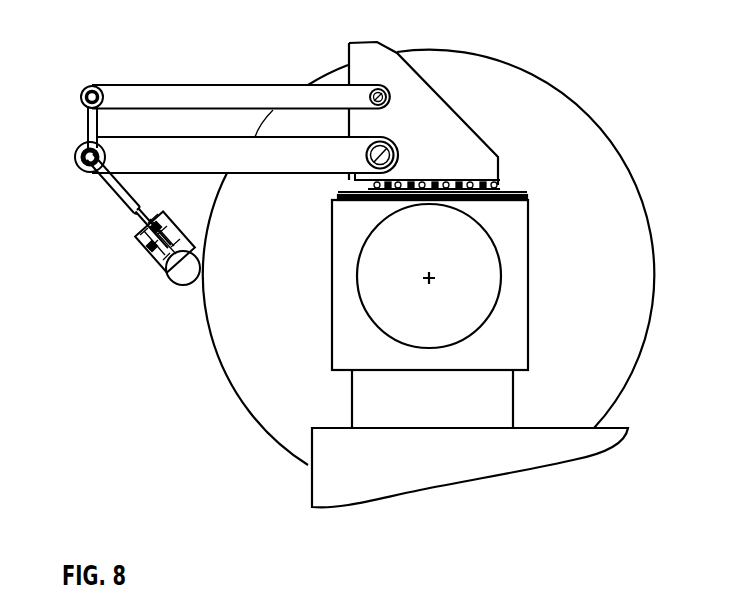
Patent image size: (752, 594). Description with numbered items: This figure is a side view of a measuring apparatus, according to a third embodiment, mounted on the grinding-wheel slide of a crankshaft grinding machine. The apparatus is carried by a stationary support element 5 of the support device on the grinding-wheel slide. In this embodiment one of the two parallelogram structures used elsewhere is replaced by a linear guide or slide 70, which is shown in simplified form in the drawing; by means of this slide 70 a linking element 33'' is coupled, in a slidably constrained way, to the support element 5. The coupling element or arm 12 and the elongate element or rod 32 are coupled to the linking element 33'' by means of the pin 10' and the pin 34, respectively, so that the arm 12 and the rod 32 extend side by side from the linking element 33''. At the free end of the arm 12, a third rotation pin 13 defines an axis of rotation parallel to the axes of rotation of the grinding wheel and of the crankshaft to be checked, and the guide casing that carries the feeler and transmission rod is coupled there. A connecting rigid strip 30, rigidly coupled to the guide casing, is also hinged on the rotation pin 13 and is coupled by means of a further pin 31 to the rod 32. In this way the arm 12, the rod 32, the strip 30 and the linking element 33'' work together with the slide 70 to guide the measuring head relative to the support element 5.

The stationary support element 5 is at (513, 190).
The pin 10' is at (429, 95).
The second rotating coupling element 12 is at (157, 157).
The third rotation pin 13 is at (90, 173).
The connecting rigid strip 30 is at (86, 125).
The pin 31 is at (84, 90).
The elongate element or rod 32 is at (218, 97).
The linking element 33'' is at (448, 109).
The pin 34 is at (380, 92).
The linear guide or slide 70 is at (503, 183).